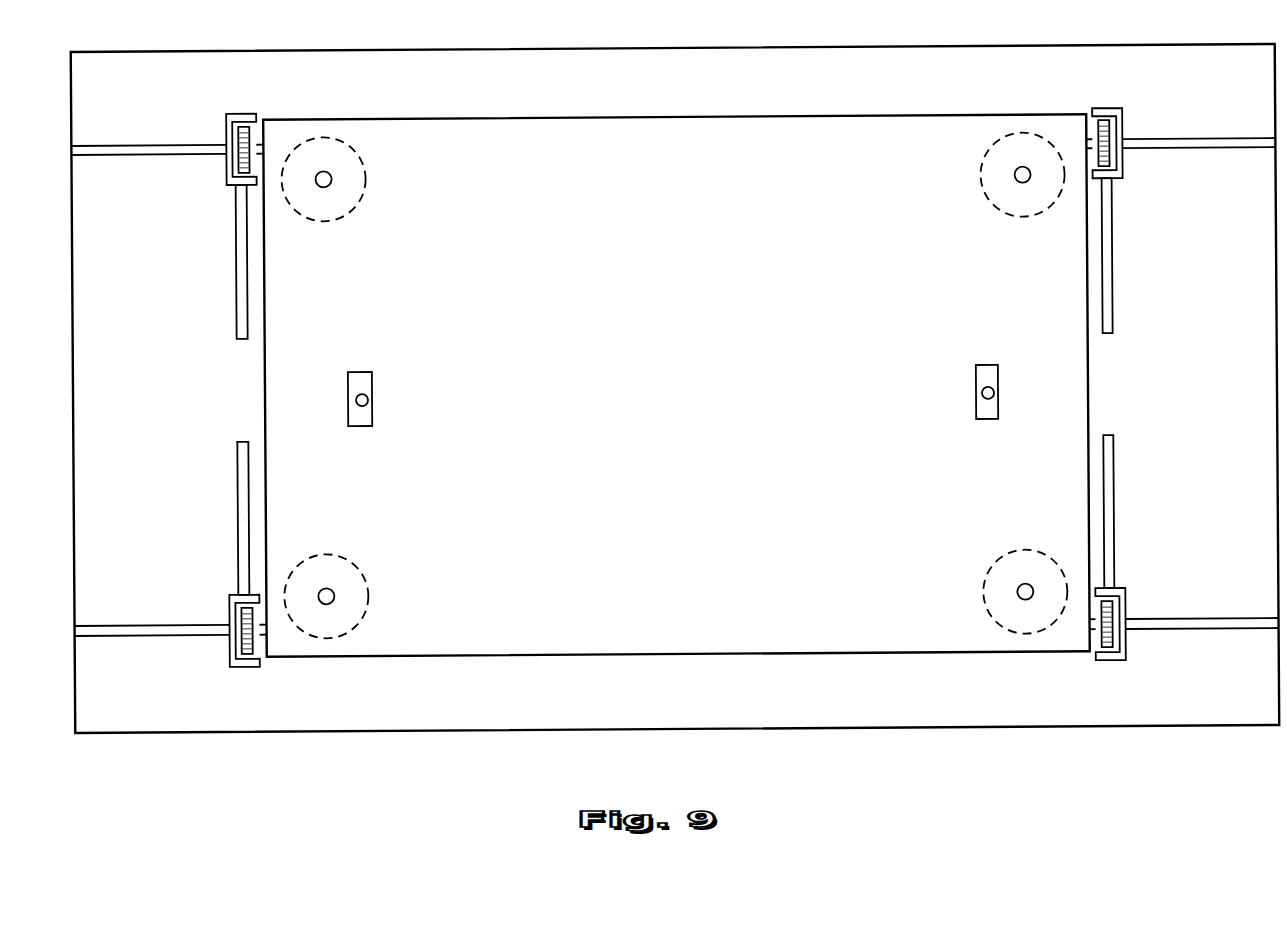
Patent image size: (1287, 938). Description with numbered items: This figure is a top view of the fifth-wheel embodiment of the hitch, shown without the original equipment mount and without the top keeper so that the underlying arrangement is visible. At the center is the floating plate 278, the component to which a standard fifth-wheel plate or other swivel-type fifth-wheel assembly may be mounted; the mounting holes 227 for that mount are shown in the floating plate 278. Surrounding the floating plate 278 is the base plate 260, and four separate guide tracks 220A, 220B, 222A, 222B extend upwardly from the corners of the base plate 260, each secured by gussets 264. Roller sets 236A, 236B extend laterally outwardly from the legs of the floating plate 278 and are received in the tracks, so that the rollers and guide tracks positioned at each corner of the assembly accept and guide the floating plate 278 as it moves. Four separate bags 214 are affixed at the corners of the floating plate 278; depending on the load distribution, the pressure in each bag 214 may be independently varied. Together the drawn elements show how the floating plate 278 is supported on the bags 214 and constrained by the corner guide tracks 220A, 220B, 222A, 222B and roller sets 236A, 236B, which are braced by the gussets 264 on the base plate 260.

The bag 214 is at (373, 176).
The guide track 220A is at (1108, 111).
The guide track 220B is at (1108, 663).
The guide track 222A is at (244, 111).
The guide track 222B is at (250, 665).
The mounting hole 227 is at (372, 398).
The roller set 236A is at (245, 150).
The roller set 236B is at (244, 634).
The base plate 260 is at (1181, 386).
The gusset 264 is at (170, 142).
The floating plate 278 is at (632, 384).